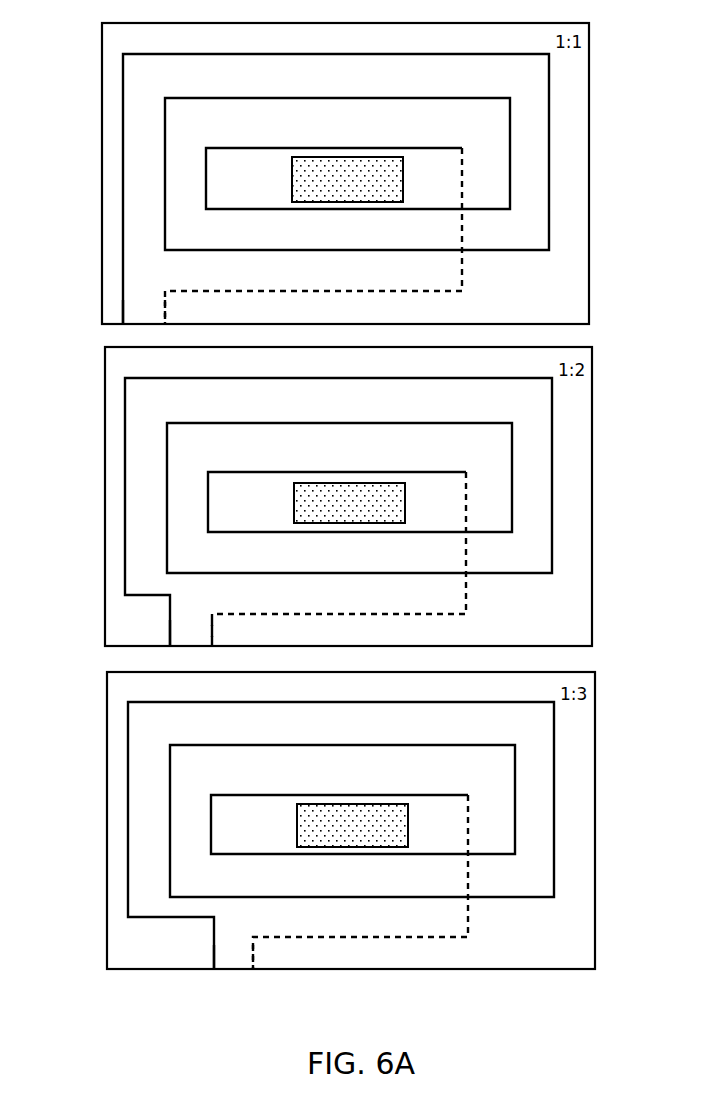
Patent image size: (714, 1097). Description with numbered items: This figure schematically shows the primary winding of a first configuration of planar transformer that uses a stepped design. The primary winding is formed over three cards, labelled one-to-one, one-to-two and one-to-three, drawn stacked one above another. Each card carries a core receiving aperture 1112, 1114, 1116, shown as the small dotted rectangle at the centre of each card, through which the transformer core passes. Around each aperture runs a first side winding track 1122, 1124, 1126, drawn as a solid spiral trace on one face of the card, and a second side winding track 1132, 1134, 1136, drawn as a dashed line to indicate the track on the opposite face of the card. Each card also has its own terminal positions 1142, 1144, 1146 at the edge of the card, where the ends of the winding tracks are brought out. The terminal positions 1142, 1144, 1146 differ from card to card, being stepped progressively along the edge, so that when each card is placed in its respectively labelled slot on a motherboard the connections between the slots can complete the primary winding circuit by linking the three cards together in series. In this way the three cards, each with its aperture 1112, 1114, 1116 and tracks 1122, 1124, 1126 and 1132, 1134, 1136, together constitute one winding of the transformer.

The core receiving aperture 1112 is at (403, 183).
The first side winding track 1122 is at (549, 220).
The second side winding track 1132 is at (462, 277).
The terminal positions 1142 is at (165, 325).
The core receiving aperture 1114 is at (405, 507).
The first side winding track 1124 is at (552, 542).
The second side winding track 1134 is at (466, 598).
The terminal positions 1144 is at (212, 648).
The core receiving aperture 1116 is at (408, 830).
The first side winding track 1126 is at (554, 865).
The second side winding track 1136 is at (468, 922).
The terminal positions 1146 is at (253, 971).